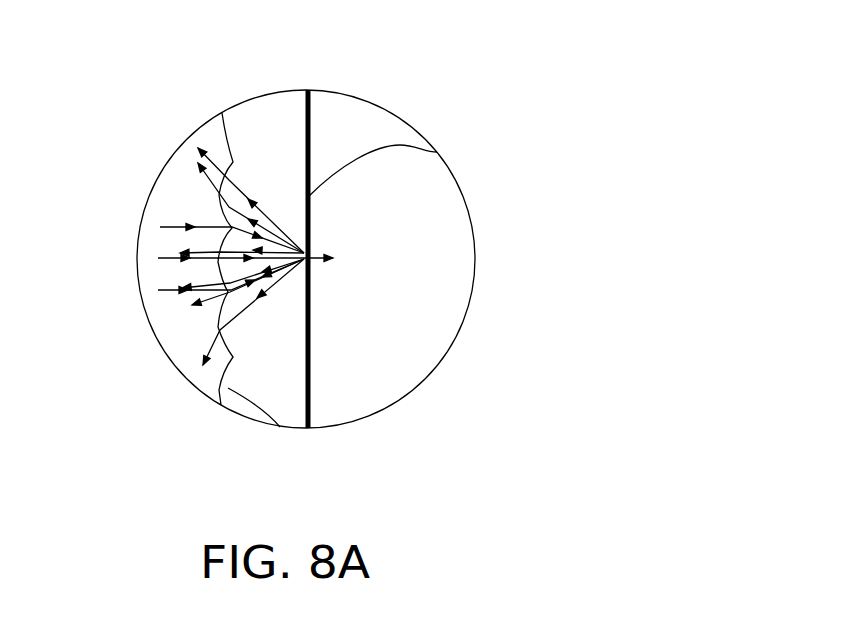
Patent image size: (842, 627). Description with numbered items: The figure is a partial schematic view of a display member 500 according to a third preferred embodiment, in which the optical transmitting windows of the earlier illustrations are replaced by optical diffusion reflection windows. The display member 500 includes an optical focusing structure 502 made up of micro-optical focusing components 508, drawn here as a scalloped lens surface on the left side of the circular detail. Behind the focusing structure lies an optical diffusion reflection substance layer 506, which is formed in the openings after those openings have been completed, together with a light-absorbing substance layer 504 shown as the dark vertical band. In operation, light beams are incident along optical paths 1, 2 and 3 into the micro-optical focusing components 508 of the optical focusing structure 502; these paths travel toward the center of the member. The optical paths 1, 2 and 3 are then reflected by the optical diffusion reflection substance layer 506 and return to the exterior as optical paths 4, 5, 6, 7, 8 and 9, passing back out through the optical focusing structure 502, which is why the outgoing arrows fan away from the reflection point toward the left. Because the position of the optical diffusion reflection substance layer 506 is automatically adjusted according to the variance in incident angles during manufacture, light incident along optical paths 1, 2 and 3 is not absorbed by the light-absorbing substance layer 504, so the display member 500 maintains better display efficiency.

The display member 500 is at (90, 66).
The optical focusing structure 502 is at (243, 370).
The light-absorbing substance layer 504 is at (308, 107).
The optical diffusion reflection substance layer 506 is at (437, 152).
The micro-optical focusing components 508 is at (280, 427).
The optical path 1 is at (226, 235).
The optical path 2 is at (239, 260).
The optical path 3 is at (224, 280).
The optical path 4 is at (244, 195).
The optical path 5 is at (244, 205).
The optical path 6 is at (237, 248).
The optical path 7 is at (237, 275).
The optical path 8 is at (241, 288).
The optical path 9 is at (248, 321).